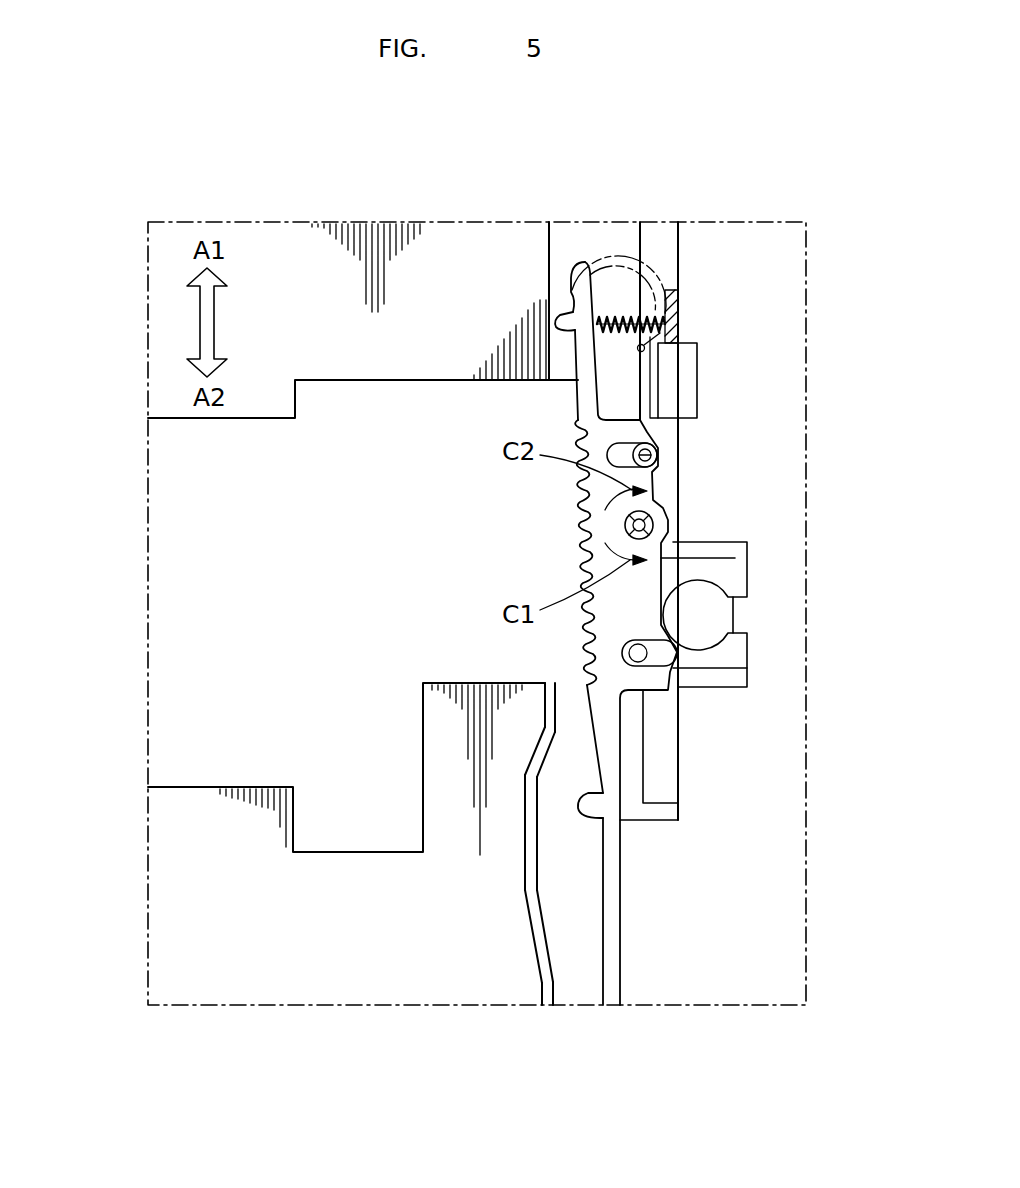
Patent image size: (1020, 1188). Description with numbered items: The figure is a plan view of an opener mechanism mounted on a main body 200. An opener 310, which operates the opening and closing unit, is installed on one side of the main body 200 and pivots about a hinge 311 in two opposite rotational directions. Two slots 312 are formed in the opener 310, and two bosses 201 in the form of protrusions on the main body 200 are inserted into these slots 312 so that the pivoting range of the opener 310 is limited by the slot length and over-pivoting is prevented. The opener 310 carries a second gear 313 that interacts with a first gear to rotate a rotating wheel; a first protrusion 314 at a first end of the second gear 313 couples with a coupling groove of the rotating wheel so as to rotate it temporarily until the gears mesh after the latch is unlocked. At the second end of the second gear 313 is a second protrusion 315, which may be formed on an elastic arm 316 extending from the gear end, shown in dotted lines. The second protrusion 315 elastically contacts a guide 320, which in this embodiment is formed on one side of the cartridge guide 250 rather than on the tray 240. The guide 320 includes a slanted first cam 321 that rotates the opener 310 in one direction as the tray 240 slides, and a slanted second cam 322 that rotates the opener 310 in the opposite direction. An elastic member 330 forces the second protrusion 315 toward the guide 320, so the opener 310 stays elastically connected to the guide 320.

The main body 200 is at (680, 270).
The bosses 201 is at (658, 457).
The tray 240 is at (170, 508).
The cartridge guide 250 is at (170, 912).
The opener 310 is at (692, 536).
The hinge 311 is at (655, 521).
The slots 312 is at (660, 435).
The second gear 313 is at (572, 514).
The first protrusion 314 is at (590, 818).
The second protrusion 315 is at (553, 320).
The elastic arm 316 is at (608, 256).
The guide 320 is at (518, 914).
The first cam 321 is at (550, 758).
The second cam 322 is at (546, 940).
The elastic member 330 is at (638, 322).